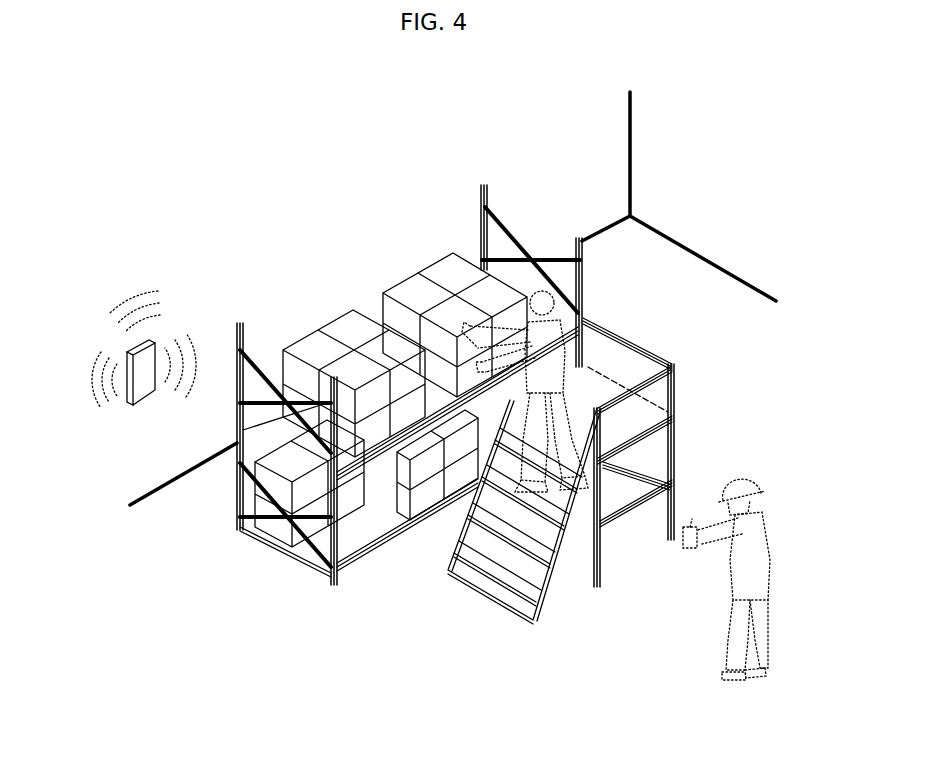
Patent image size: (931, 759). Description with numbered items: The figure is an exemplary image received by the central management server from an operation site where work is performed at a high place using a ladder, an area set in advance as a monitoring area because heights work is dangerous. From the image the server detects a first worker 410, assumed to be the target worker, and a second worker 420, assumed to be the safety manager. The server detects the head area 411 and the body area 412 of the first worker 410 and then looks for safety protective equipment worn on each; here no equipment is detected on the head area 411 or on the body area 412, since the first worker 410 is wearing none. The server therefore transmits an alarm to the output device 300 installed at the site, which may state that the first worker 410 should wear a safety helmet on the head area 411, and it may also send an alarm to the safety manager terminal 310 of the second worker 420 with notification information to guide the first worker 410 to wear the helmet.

The output device 300 is at (143, 393).
The safety manager terminal 310 is at (686, 550).
The first worker 410 is at (566, 592).
The head area 411 is at (557, 259).
The body area 412 is at (620, 340).
The second worker 420 is at (740, 682).